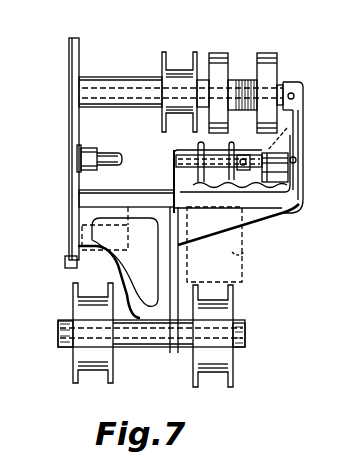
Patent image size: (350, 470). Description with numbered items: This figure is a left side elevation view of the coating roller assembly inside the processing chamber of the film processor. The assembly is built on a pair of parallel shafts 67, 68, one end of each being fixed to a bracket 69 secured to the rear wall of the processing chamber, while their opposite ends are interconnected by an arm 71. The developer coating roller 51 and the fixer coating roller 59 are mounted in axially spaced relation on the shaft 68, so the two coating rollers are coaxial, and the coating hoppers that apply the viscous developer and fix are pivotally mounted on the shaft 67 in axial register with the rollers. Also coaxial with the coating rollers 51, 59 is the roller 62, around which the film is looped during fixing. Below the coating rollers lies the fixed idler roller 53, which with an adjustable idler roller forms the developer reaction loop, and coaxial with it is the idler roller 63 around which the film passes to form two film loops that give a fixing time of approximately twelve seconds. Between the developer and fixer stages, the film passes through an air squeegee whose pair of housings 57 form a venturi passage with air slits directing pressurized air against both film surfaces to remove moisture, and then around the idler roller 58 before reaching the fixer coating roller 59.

The developer coating roller 51 is at (263, 62).
The fixed idler roller 53 is at (218, 355).
The housings 57 is at (244, 256).
The idler roller 58 is at (222, 178).
The fixer coating roller 59 is at (218, 63).
The roller 62 is at (176, 72).
The idler roller 63 is at (84, 352).
The shaft 67 is at (280, 166).
The shaft 68 is at (130, 73).
The bracket 69 is at (73, 113).
The arm 71 is at (297, 160).